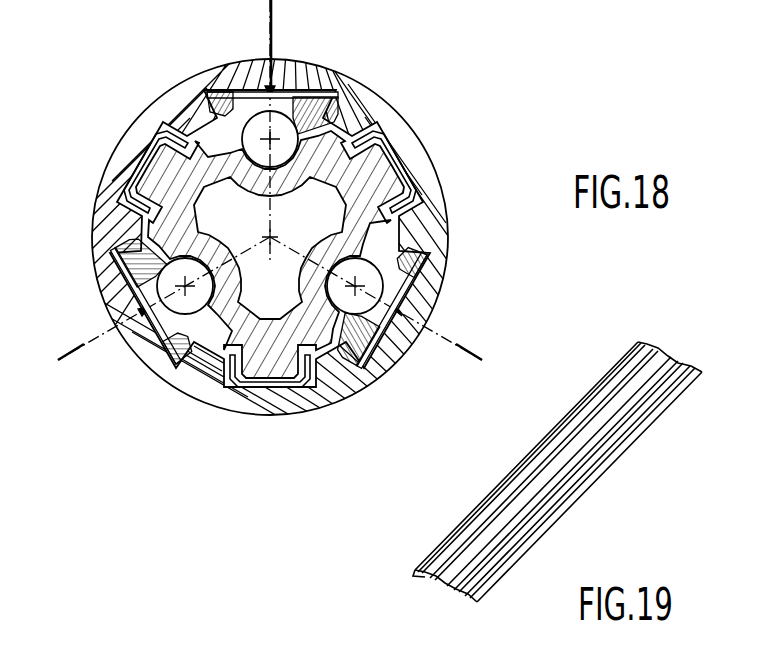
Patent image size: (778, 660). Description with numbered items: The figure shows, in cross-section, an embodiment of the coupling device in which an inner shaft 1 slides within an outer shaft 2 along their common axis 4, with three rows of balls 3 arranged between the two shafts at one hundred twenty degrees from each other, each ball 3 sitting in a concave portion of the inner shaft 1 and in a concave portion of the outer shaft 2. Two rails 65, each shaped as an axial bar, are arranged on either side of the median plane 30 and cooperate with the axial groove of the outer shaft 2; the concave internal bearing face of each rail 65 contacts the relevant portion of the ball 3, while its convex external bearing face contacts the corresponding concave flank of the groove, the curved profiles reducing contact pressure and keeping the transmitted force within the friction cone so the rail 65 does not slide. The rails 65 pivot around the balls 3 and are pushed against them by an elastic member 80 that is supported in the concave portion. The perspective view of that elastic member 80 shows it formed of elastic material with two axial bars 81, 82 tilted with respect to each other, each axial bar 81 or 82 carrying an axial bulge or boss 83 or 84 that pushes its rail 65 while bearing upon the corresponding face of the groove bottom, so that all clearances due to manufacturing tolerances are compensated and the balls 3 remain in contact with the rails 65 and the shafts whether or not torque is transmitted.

In FIG. 18, the inner shaft 1 is at (156, 160).
In FIG. 18, the outer shaft 2 is at (404, 139).
In FIG. 18, the ball 3 is at (296, 131).
In FIG. 18, the common axis 4 is at (337, 185).
In FIG. 18, the rail 65 is at (203, 100).
In FIG. 18, the elastic member 80 is at (270, 184).
In FIG. 19, the elastic member 80 is at (570, 450).
In FIG. 18, the axial bar 81 is at (275, 92).
In FIG. 19, the axial bar 81 is at (688, 370).
In FIG. 18, the axial bar 82 is at (247, 91).
In FIG. 19, the axial bar 82 is at (628, 362).
In FIG. 18, the axial bulge or boss 83 is at (321, 88).
In FIG. 19, the axial bulge or boss 83 is at (645, 430).
In FIG. 18, the axial bulge or boss 84 is at (218, 90).
In FIG. 19, the axial bulge or boss 84 is at (592, 392).
In FIG. 18, the median plane 30 is at (287, 27).